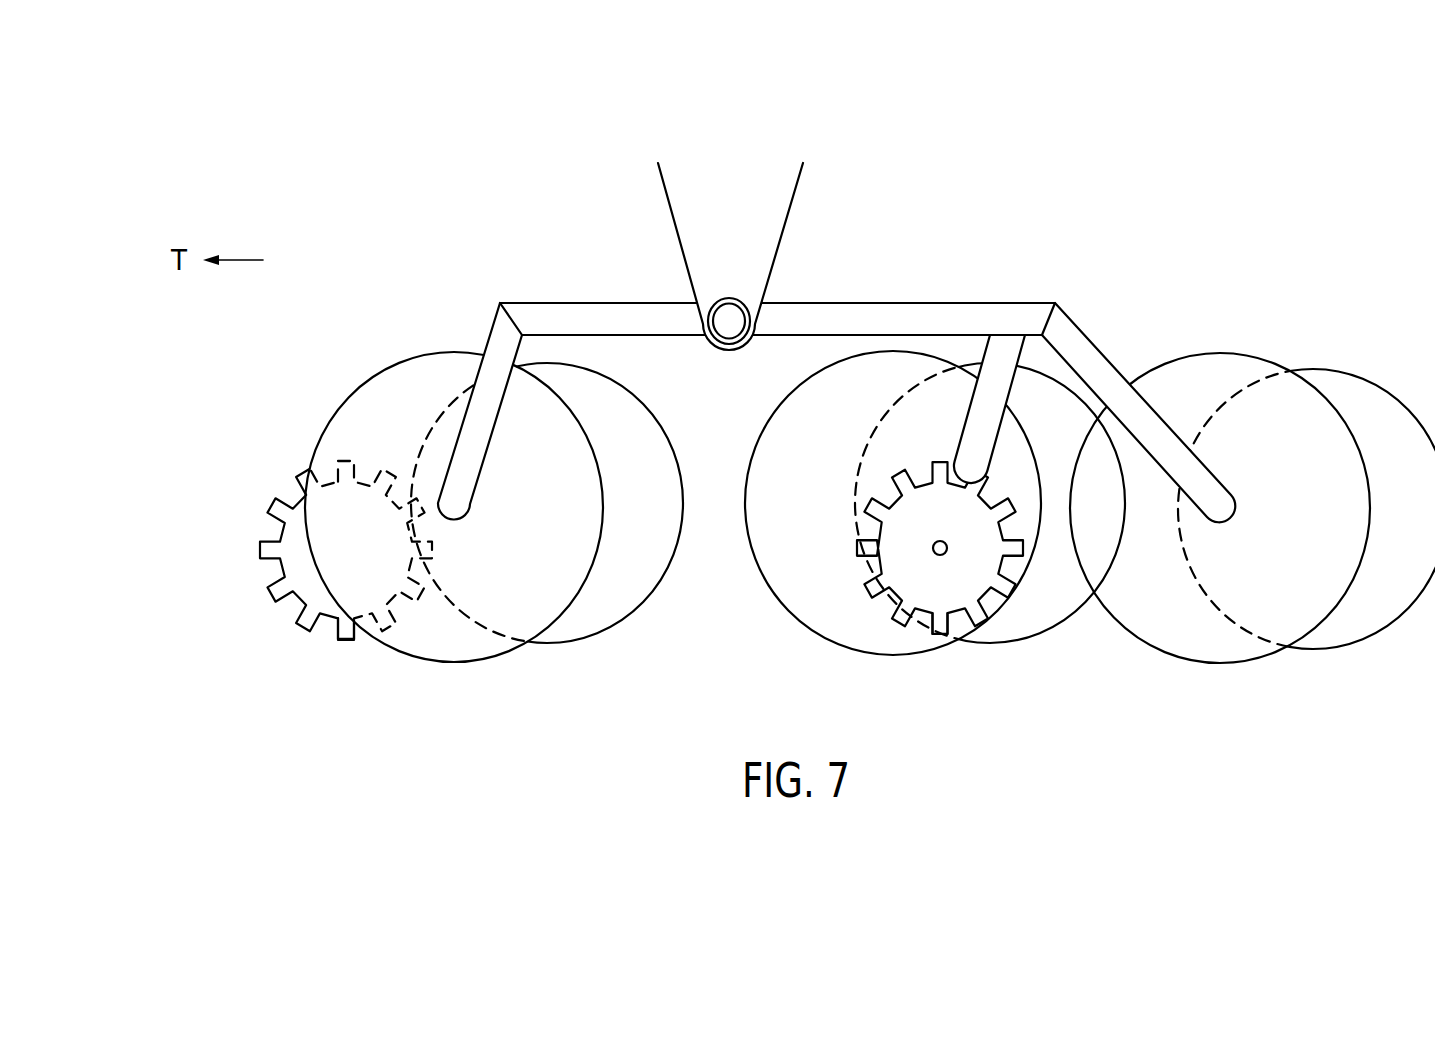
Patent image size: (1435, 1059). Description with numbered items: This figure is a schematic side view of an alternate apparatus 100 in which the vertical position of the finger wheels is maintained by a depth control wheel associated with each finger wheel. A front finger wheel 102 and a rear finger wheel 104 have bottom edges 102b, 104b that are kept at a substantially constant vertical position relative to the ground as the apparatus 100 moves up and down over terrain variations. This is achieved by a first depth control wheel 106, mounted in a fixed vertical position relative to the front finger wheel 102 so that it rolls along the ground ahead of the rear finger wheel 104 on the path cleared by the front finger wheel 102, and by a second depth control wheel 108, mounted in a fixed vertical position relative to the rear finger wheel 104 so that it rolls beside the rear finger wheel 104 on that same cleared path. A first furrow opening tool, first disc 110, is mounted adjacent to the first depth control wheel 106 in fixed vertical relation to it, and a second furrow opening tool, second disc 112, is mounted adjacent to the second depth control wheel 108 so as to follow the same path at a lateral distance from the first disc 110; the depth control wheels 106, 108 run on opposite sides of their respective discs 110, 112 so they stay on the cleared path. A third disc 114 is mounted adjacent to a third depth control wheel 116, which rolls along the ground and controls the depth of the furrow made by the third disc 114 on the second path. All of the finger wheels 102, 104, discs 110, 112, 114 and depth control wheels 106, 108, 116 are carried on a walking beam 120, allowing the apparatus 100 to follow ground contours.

The apparatus 100 is at (1012, 197).
The front finger wheel 102 is at (269, 594).
The bottom edge of front finger wheel 102b is at (345, 641).
The rear finger wheel 104 is at (866, 590).
The bottom edge of rear finger wheel 104b is at (940, 640).
The first depth control wheel 106 is at (570, 644).
The second depth control wheel 108 is at (1052, 642).
The first disc 110 is at (425, 352).
The second disc 112 is at (772, 594).
The third disc 114 is at (1215, 664).
The third depth control wheel 116 is at (1332, 369).
The walking beam 120 is at (830, 303).